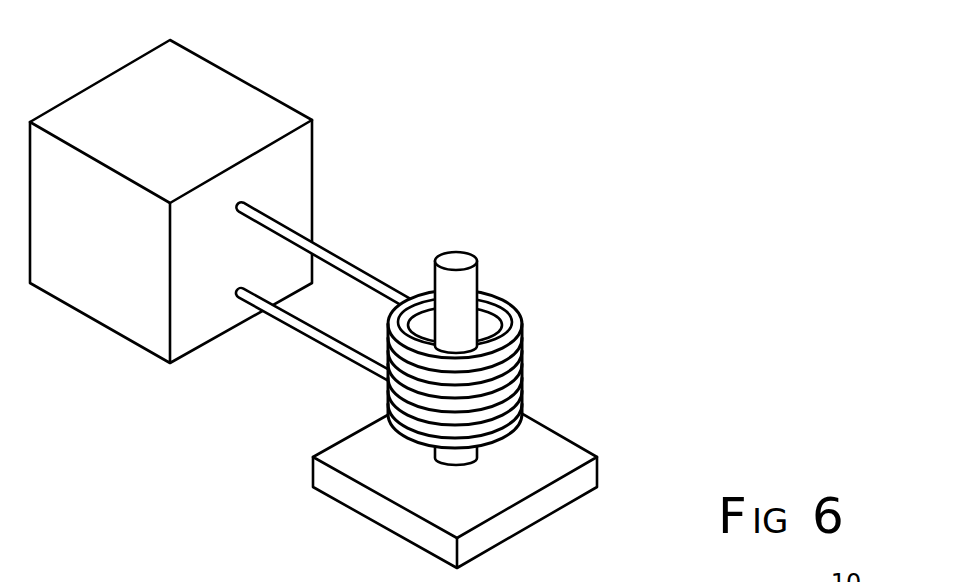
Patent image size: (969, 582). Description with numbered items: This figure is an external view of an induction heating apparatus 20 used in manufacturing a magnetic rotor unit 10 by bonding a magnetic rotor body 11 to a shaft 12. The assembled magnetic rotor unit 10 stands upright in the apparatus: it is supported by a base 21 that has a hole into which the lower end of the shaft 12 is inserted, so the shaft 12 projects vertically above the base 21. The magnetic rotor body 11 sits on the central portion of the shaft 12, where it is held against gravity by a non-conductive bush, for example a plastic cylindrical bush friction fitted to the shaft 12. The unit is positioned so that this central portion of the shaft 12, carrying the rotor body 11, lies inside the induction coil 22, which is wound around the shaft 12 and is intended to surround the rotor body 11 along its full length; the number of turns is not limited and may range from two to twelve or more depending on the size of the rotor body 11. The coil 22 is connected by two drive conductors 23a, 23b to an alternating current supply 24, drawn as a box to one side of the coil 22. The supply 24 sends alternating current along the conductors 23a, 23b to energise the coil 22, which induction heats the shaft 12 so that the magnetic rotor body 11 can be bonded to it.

The induction heating apparatus 20 is at (700, 60).
The magnetic rotor unit 10 is at (502, 276).
The shaft 12 is at (461, 279).
The magnetic rotor body 11 is at (486, 331).
The induction coil 22 is at (499, 360).
The base 21 is at (607, 458).
The alternating current supply 24 is at (251, 62).
The drive conductor 23a is at (354, 247).
The drive conductor 23b is at (294, 346).